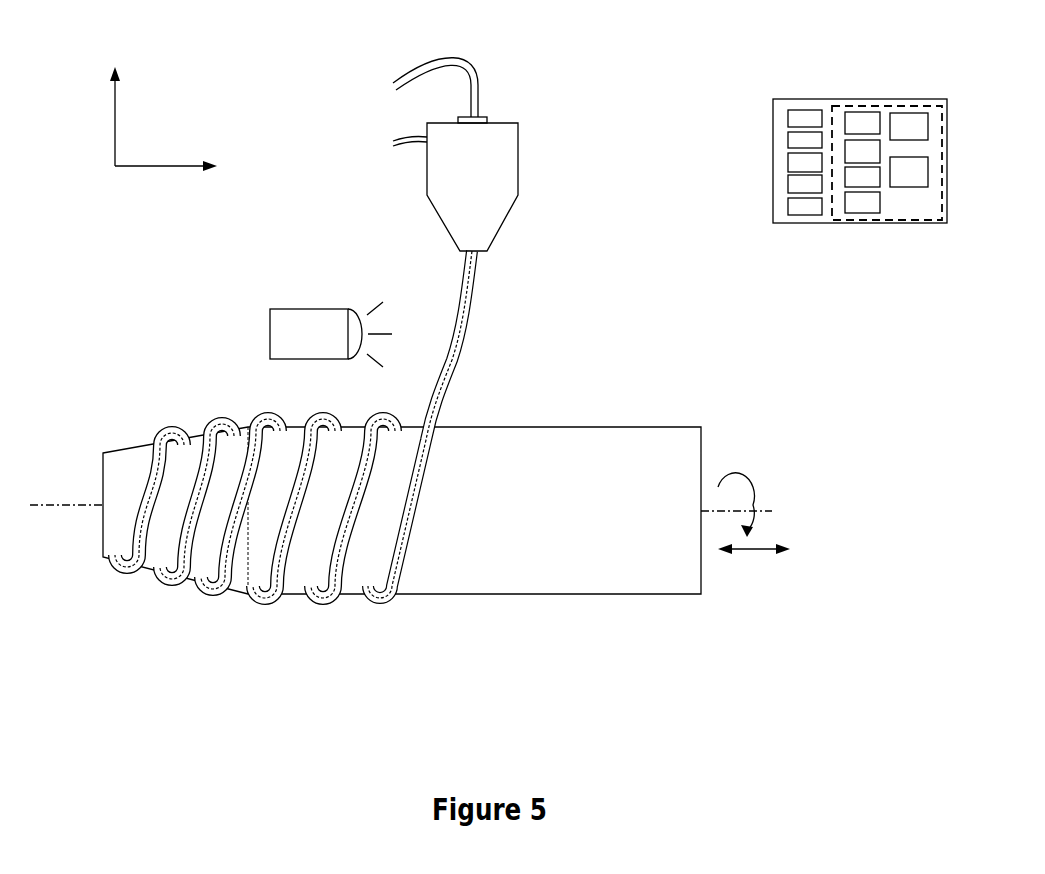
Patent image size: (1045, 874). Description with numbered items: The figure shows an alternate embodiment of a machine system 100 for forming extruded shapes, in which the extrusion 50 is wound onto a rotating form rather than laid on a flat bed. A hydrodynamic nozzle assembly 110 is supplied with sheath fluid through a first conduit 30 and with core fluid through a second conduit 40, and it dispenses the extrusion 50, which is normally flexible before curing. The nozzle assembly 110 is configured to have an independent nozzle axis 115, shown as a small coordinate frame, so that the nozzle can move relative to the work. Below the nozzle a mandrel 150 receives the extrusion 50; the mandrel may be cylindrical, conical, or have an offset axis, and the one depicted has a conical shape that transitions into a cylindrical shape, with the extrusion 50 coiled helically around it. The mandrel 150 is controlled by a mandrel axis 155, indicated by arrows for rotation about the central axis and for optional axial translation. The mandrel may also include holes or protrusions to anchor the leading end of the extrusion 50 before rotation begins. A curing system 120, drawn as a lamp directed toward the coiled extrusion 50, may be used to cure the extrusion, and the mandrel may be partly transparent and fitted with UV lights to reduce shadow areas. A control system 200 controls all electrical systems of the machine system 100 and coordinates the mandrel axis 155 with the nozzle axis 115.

The first conduit 30 is at (480, 75).
The second conduit 40 is at (405, 130).
The extrusion 50 is at (470, 320).
The machine system 100 is at (204, 637).
The hydrodynamic nozzle assembly 110 is at (518, 148).
The nozzle axis 115 is at (176, 91).
The curing system 120 is at (315, 309).
The mandrel 150 is at (492, 522).
The mandrel axis 155 is at (750, 566).
The control system 200 is at (878, 252).